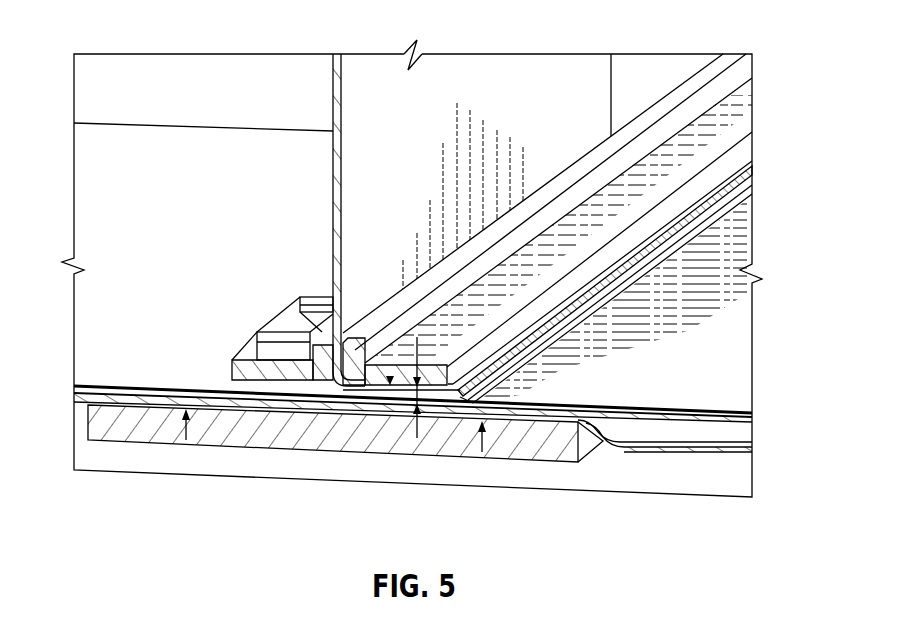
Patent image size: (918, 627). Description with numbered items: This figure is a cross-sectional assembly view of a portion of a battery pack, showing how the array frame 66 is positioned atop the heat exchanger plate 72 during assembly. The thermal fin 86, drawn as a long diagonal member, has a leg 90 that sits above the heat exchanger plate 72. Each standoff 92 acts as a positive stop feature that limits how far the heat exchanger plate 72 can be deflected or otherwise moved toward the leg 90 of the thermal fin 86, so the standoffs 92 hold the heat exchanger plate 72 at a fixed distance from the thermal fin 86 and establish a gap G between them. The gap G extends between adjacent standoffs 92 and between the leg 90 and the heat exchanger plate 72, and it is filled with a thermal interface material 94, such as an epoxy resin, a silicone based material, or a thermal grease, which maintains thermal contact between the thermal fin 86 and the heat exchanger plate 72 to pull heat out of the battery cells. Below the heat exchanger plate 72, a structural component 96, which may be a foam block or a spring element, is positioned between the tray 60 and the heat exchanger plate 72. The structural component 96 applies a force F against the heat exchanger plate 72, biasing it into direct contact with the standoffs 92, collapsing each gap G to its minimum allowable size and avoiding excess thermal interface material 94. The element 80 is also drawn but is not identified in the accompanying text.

The tray 60 is at (346, 468).
The array frame 66 is at (658, 75).
The heat exchanger plate 72 is at (743, 398).
The rail member 80 is at (740, 128).
The thermal fin 86 is at (477, 224).
The leg 90 is at (380, 345).
The standoff 92 is at (303, 300).
The thermal interface material 94 is at (526, 352).
The structural component 96 is at (530, 453).
The force F is at (186, 440).
The gap G is at (417, 342).